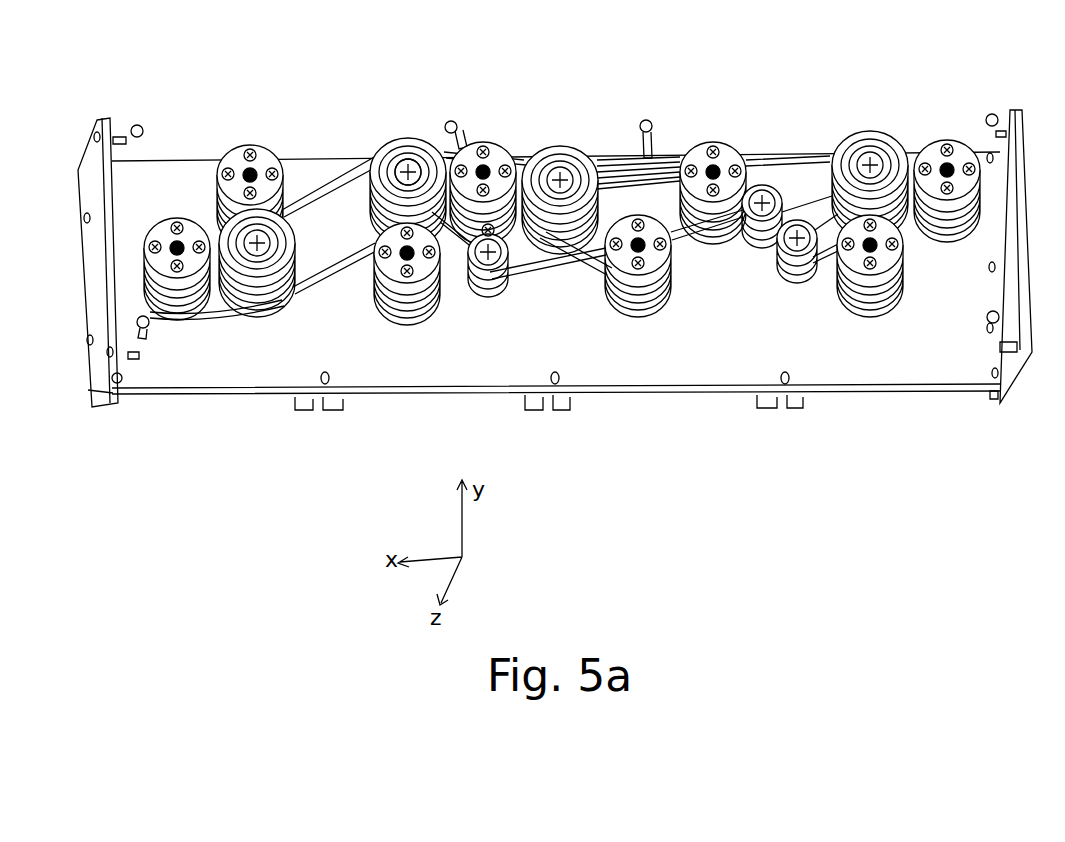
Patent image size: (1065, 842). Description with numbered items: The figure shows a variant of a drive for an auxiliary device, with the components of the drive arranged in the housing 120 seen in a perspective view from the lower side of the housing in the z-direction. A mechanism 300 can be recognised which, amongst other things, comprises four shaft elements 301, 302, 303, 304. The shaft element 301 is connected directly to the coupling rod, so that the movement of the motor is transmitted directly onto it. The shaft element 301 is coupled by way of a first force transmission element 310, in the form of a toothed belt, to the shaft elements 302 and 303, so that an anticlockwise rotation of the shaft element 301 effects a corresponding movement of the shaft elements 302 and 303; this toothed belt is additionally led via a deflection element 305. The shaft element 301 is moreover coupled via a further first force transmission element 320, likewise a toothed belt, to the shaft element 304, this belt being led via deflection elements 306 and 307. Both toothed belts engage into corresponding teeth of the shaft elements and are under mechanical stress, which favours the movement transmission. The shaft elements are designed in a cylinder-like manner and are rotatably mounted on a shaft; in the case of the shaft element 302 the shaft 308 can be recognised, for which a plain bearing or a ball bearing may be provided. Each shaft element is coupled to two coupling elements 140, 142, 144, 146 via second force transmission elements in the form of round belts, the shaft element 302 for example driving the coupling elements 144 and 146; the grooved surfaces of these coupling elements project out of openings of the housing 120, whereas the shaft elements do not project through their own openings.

The housing 120 is at (943, 397).
The coupling element 140 is at (228, 163).
The coupling element 142 is at (157, 220).
The coupling element 144 is at (470, 143).
The coupling element 146 is at (387, 263).
The mechanism 300 is at (870, 360).
The shaft element 301 is at (557, 147).
The shaft element 302 is at (382, 150).
The shaft element 303 is at (223, 240).
The shaft element 304 is at (850, 143).
The deflection element 305 is at (462, 285).
The deflection element 306 is at (737, 233).
The deflection element 307 is at (783, 277).
The shaft 308 is at (410, 158).
The first force transmission element 310 is at (327, 177).
The further first force transmission element 320 is at (602, 305).